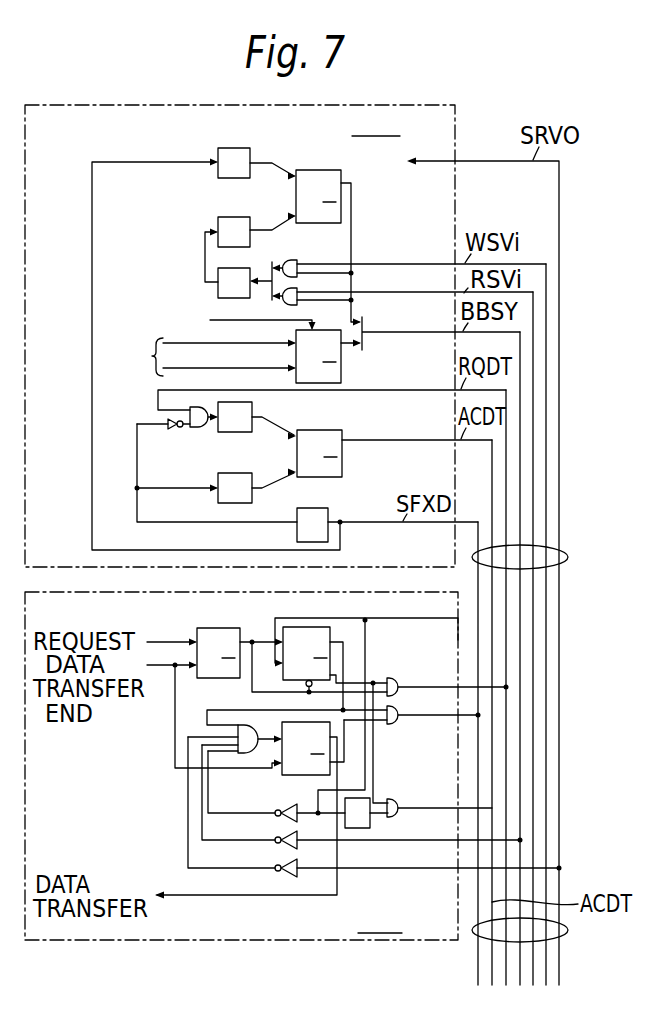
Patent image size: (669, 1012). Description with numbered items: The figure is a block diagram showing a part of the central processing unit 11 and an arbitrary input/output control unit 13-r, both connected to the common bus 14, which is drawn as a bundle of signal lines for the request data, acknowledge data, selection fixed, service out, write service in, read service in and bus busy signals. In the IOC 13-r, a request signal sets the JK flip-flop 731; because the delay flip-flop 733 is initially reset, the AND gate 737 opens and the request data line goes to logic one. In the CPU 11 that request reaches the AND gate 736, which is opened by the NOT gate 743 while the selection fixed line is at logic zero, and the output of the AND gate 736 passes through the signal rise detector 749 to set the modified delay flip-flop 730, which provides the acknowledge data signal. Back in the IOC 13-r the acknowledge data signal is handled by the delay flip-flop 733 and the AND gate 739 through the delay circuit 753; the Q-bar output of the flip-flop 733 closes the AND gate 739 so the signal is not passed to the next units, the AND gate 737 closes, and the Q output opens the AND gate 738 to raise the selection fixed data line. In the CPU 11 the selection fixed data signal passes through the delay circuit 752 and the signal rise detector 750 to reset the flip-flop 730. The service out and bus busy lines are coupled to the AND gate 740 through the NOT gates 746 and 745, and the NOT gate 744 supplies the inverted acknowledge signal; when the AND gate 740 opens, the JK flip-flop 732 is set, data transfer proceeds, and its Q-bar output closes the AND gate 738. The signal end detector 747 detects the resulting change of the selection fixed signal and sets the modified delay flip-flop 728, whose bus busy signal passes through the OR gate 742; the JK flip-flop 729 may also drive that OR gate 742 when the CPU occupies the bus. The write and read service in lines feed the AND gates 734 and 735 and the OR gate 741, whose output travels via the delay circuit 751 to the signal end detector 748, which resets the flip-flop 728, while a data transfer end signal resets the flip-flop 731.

The central processing unit 11 is at (402, 98).
The input/output control unit 13-r is at (334, 942).
The common bus 14 is at (568, 557).
The modified delay flip-flop 728 is at (321, 170).
The JK flip-flop 729 is at (341, 372).
The modified delay flip-flop 730 is at (342, 461).
The JK flip-flop 731 is at (226, 628).
The JK flip-flop 732 is at (282, 778).
The delay flip-flop 733 is at (323, 627).
The AND gate 734 is at (298, 261).
The AND gate 735 is at (299, 288).
The AND gate 736 is at (201, 430).
The AND gate 737 is at (396, 679).
The AND gate 738 is at (397, 723).
The AND gate 739 is at (397, 801).
The AND gate 740 is at (250, 712).
The OR gate 741 is at (272, 283).
The OR gate 742 is at (365, 334).
The NOT gate 743 is at (172, 431).
The NOT gate 744 is at (290, 806).
The NOT gate 745 is at (297, 835).
The NOT gate 746 is at (297, 864).
The signal end detector 747 is at (237, 148).
The signal end detector 748 is at (251, 207).
The signal rise detector 749 is at (253, 407).
The signal rise detector 750 is at (252, 486).
The delay circuit 751 is at (240, 268).
The delay circuit 752 is at (329, 510).
The delay circuit 753 is at (370, 826).